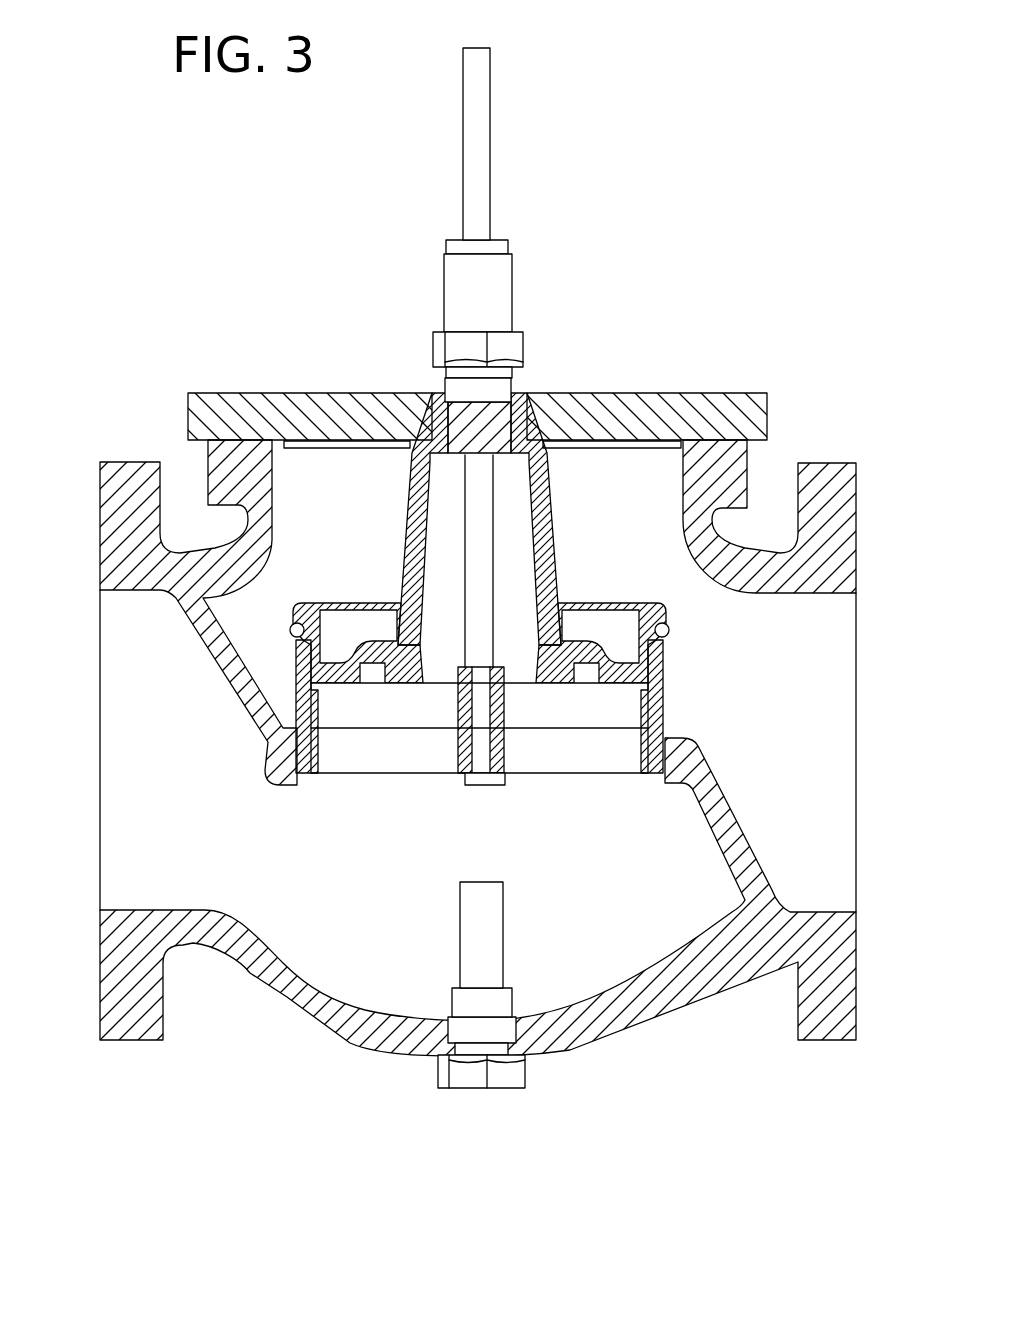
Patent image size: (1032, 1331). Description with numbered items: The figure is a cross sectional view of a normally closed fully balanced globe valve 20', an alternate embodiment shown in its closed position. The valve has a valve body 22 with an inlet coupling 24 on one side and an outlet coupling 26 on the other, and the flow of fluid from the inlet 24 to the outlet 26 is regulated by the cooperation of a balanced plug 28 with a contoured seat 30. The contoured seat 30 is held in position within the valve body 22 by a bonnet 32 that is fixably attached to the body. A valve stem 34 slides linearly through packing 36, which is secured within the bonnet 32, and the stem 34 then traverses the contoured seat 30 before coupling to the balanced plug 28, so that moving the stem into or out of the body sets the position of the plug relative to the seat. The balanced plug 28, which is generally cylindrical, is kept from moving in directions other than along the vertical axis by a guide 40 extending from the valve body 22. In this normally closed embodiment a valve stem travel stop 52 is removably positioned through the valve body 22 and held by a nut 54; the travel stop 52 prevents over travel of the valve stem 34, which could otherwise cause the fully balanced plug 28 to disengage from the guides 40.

The normally closed fully balanced globe valve 20' is at (112, 253).
The valve body 22 is at (670, 1024).
The inlet coupling 24 is at (100, 612).
The outlet coupling 26 is at (860, 617).
The balanced plug 28 is at (372, 752).
The contoured seat 30 is at (556, 527).
The bonnet 32 is at (668, 393).
The valve stem 34 is at (490, 82).
The packing 36 is at (444, 289).
The guide 40 is at (268, 750).
The valve stem travel stop 52 is at (503, 935).
The nut 54 is at (500, 1090).